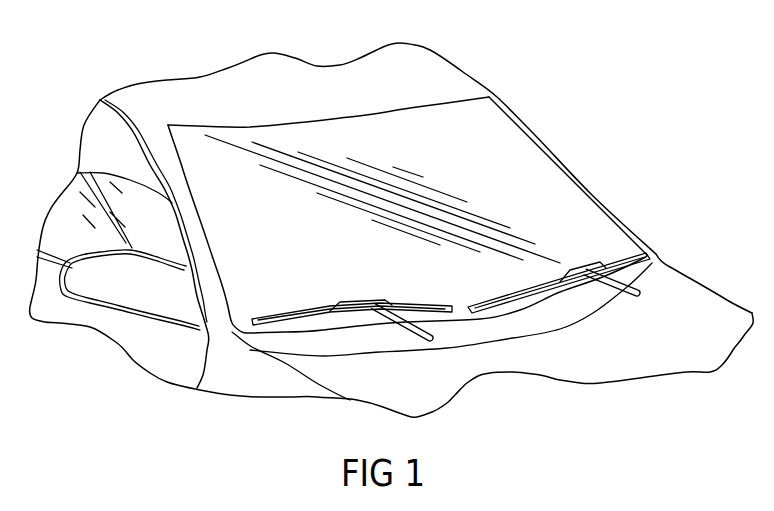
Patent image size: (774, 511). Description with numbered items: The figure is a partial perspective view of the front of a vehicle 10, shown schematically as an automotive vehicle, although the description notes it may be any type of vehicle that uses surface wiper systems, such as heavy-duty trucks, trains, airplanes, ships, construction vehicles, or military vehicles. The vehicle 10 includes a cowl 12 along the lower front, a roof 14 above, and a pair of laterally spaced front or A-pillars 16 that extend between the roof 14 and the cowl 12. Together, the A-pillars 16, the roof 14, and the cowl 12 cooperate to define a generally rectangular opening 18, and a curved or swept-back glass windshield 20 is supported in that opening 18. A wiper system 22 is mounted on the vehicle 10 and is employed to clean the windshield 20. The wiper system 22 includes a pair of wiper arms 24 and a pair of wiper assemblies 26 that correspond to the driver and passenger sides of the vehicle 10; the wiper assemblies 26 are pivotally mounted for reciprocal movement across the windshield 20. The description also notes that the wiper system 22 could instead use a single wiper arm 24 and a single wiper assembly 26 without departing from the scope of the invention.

The vehicle 10 is at (66, 101).
The cowl 12 is at (664, 277).
The roof 14 is at (459, 79).
The A-pillars 16 is at (80, 172).
The opening 18 is at (547, 159).
The windshield 20 is at (469, 154).
The wiper system 22 is at (535, 357).
The wiper arms 24 is at (399, 341).
The wiper assemblies 26 is at (311, 305).